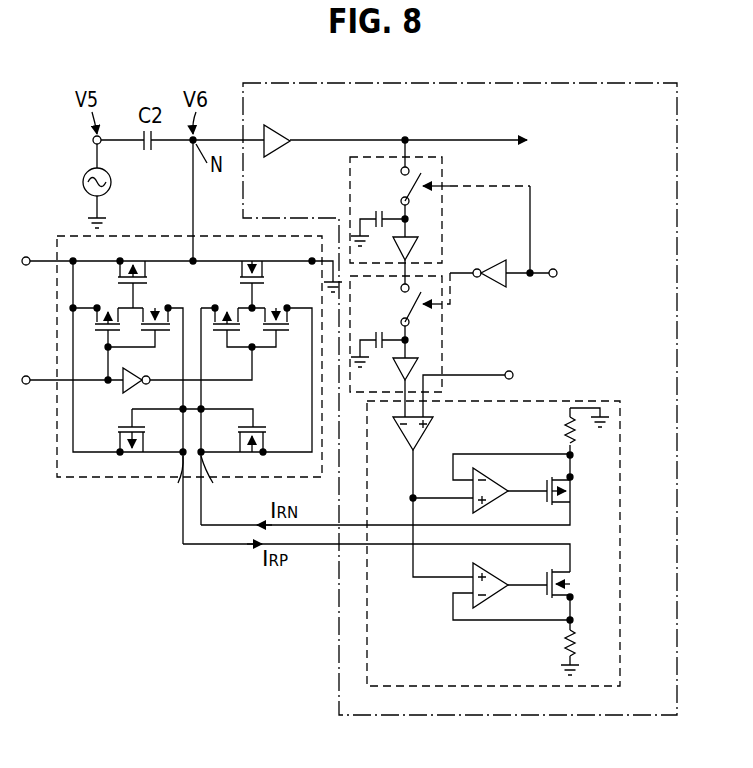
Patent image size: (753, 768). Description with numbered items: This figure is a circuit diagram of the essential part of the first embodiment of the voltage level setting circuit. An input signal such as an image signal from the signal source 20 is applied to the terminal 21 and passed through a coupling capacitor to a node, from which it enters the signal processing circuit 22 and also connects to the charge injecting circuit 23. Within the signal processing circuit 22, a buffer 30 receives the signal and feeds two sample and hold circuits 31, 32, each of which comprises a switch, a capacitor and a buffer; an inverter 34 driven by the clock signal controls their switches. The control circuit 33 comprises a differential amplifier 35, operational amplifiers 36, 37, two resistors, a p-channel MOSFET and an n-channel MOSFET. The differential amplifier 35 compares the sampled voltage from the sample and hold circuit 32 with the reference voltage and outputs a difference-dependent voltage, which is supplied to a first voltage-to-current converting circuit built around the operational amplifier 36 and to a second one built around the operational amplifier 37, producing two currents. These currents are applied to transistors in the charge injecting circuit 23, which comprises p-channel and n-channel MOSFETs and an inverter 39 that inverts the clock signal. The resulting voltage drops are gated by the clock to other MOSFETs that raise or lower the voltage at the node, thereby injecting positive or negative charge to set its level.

The signal source 20 is at (83, 182).
The terminal 21 is at (93, 141).
The signal processing circuit 22 is at (398, 81).
The charge injecting circuit 23 is at (93, 478).
The buffer 30 is at (282, 127).
The sample and hold circuit 31 is at (419, 146).
The sample and hold circuit 32 is at (446, 335).
The control circuit 33 is at (470, 687).
The inverter 34 is at (496, 260).
The differential amplifier 35 is at (434, 424).
The operational amplifier 36 is at (497, 482).
The operational amplifier 37 is at (494, 575).
The inverter 39 is at (126, 393).